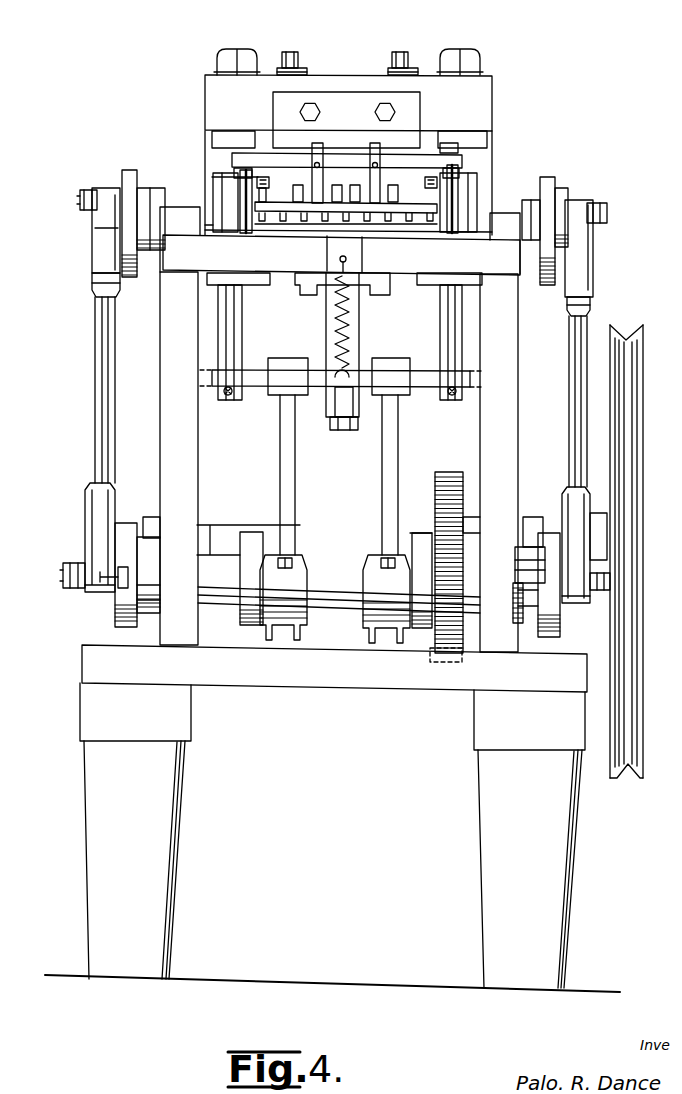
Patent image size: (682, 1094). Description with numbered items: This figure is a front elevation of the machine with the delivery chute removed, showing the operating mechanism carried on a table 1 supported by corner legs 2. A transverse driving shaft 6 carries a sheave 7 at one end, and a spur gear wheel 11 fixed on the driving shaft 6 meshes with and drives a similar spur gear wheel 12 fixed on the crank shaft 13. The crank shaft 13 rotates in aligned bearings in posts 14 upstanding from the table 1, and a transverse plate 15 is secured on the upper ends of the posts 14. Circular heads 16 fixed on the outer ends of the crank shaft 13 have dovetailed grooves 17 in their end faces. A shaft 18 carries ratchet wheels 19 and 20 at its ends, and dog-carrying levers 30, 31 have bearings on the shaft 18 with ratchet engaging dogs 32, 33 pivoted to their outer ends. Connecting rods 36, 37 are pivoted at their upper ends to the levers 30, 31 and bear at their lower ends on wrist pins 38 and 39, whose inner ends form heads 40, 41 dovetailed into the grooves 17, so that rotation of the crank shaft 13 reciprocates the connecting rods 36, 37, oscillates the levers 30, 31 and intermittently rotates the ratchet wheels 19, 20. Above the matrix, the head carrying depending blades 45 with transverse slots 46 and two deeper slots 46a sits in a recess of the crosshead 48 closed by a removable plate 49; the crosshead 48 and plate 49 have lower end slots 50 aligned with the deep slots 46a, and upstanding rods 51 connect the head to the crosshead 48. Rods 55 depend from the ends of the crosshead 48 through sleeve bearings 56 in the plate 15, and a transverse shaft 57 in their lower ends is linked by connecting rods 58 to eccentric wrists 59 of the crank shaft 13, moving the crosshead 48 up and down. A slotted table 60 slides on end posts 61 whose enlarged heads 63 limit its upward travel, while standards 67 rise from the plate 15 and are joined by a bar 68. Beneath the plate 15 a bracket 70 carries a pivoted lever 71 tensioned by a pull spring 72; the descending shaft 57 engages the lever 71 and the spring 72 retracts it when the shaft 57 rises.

The table 1 is at (92, 650).
The corner legs 2 is at (87, 795).
The transverse driving shaft 6 is at (599, 516).
The sheave 7 is at (650, 425).
The spur gear wheel 11 is at (455, 470).
The spur gear wheel 12 is at (448, 660).
The crank shaft 13 is at (223, 556).
The posts 14 is at (166, 441).
The transverse plate 15 is at (178, 263).
The circular heads 16 is at (130, 525).
The dovetailed grooves 17 is at (125, 593).
The shaft 18 is at (517, 212).
The ratchet wheel 19 is at (134, 170).
The ratchet wheel 20 is at (548, 179).
The dog-carrying lever 30 is at (124, 180).
The dog-carrying lever 31 is at (570, 196).
The ratchet engaging dog 32 is at (140, 240).
The ratchet engaging dog 33 is at (550, 243).
The connecting rod 36 is at (103, 390).
The connecting rod 37 is at (574, 369).
The wrist pin 38 is at (62, 577).
The wrist pin 39 is at (599, 592).
The head 40 is at (118, 575).
The head 41 is at (548, 598).
The depending blades 45 is at (255, 178).
The transverse slots 46 is at (257, 192).
The deep slots 46a is at (375, 178).
The crosshead 48 is at (484, 106).
The removable plate 49 is at (350, 100).
The lower end slots 50 is at (374, 148).
The upstanding rods 51 is at (291, 56).
The rods 55 is at (222, 146).
The sleeve bearings 56 is at (214, 197).
The transverse shaft 57 is at (368, 367).
The connecting rods 58 is at (280, 440).
The eccentric wrists 59 is at (369, 563).
The table 60 is at (407, 228).
The end posts 61 is at (470, 190).
The enlarged heads 63 is at (438, 162).
The standards 67 is at (238, 212).
The bar 68 is at (293, 158).
The bracket 70 is at (327, 320).
The lever 71 is at (340, 435).
The pull spring 72 is at (352, 332).